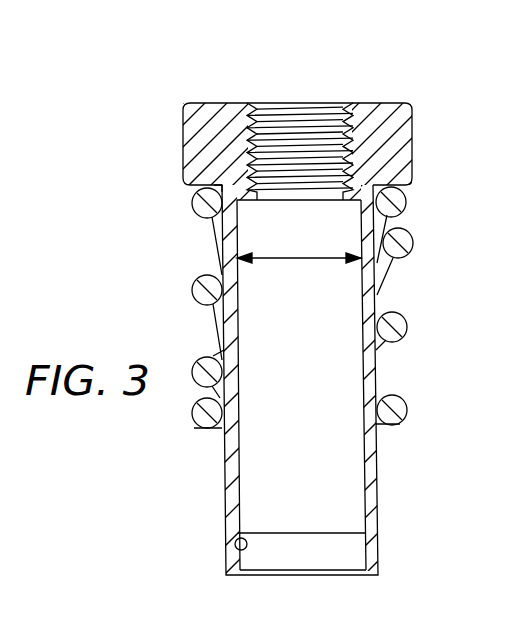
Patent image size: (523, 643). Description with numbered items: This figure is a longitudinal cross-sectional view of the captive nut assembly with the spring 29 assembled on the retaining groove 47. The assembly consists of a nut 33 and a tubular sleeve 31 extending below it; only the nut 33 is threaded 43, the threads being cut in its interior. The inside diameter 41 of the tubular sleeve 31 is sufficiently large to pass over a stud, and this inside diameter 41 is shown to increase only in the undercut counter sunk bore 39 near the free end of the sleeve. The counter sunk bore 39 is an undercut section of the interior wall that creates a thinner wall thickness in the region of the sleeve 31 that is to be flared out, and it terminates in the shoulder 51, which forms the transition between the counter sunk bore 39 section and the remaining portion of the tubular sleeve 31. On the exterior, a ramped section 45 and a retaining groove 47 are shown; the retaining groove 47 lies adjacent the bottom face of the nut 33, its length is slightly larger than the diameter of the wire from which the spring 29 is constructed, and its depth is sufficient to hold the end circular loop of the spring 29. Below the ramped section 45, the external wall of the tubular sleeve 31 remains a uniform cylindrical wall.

The spring 29 is at (403, 400).
The tubular sleeve 31 is at (372, 496).
The nut 33 is at (388, 137).
The counter sunk bore 39 is at (340, 550).
The inside diameter 41 is at (217, 239).
The threads 43 is at (311, 137).
The ramped section 45 is at (293, 258).
The retaining groove 47 is at (222, 183).
The shoulder 51 is at (235, 552).